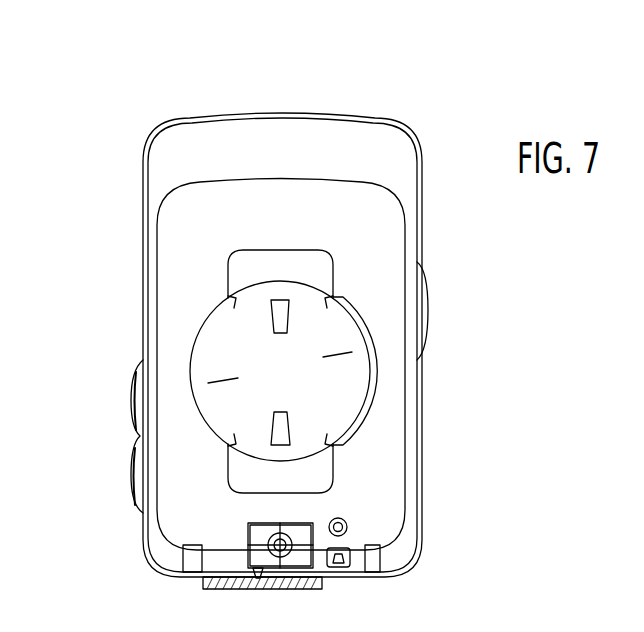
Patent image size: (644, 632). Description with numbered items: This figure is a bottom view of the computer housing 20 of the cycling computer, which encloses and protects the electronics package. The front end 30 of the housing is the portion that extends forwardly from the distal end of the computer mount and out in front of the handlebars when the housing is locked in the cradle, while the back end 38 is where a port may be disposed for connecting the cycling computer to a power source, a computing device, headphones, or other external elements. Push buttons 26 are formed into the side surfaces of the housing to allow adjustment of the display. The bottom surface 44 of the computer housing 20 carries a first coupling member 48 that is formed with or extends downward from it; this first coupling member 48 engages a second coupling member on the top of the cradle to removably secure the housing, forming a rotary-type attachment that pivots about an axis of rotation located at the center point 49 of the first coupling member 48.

The computer housing 20 is at (106, 200).
The front end 30 is at (286, 90).
The push buttons 26 is at (137, 472).
The bottom surface 44 is at (200, 277).
The first coupling member 48 is at (273, 330).
The center point 49 is at (280, 370).
The back end 38 is at (288, 608).